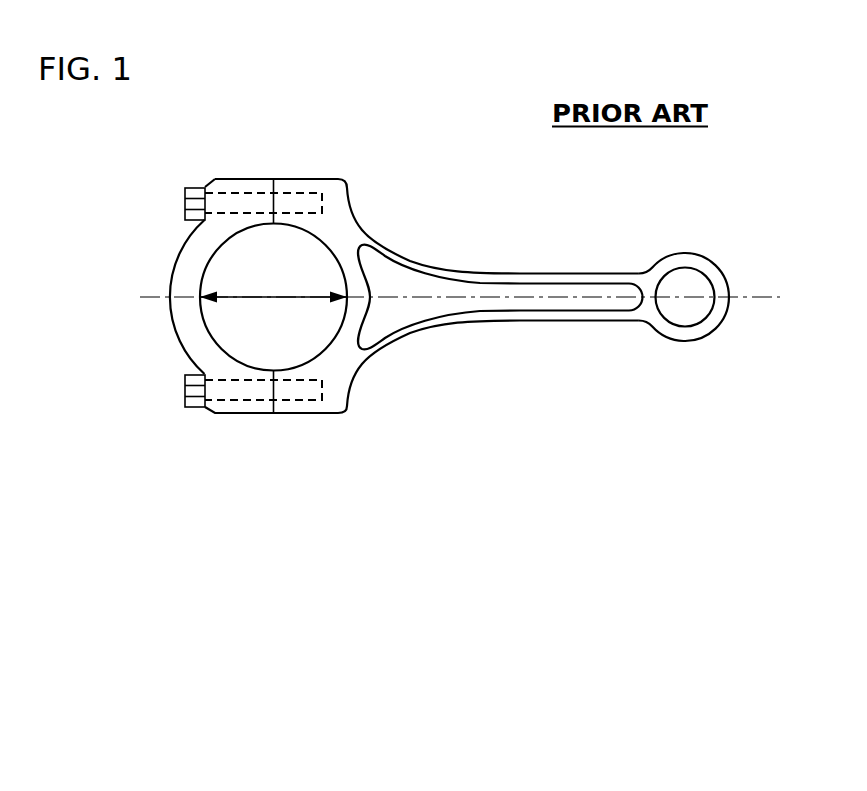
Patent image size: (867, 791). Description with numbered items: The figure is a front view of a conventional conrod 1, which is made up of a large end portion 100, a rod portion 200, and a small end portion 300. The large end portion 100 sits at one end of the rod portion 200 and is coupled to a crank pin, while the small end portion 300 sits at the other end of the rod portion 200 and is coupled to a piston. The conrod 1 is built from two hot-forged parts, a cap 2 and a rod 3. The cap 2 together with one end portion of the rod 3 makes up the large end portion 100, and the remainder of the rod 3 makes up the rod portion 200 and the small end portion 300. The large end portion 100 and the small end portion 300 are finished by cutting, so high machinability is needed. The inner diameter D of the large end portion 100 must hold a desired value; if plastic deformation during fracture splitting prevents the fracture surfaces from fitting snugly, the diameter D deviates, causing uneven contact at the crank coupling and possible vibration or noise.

The conrod 1 is at (440, 137).
The cap 2 is at (235, 410).
The rod 3 is at (453, 320).
The large end portion 100 is at (355, 537).
The rod portion 200 is at (648, 537).
The small end portion 300 is at (723, 537).
The inner diameter D is at (273, 280).